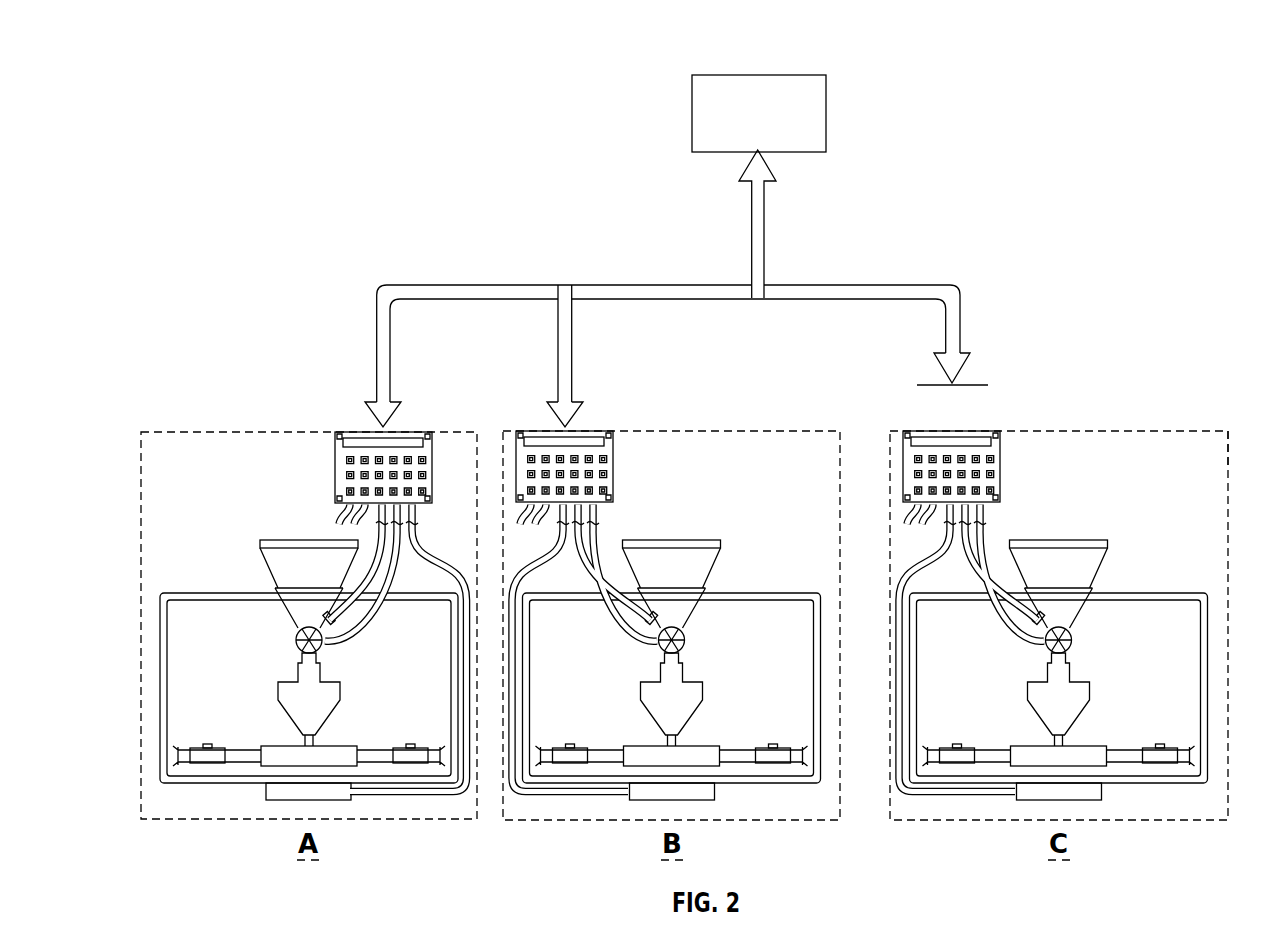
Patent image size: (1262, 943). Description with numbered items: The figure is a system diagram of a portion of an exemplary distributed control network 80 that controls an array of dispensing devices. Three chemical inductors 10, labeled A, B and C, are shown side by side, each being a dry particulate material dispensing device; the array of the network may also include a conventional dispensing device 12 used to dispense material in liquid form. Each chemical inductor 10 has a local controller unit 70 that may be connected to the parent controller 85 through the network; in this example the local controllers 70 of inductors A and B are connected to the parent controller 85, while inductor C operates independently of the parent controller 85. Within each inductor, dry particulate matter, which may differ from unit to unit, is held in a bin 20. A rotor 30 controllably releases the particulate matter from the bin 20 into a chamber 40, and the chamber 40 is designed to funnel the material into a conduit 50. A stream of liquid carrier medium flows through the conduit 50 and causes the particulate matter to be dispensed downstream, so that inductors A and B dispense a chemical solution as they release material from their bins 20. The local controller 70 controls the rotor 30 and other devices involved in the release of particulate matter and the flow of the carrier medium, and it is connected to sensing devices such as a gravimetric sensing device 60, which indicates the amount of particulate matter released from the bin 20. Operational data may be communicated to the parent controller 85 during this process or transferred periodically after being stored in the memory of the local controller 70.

The distributed control network 80 is at (165, 67).
The parent controller 85 is at (826, 113).
The chemical inductor 10 is at (199, 428).
The conventional dispensing device 12 is at (1244, 446).
The bin 20 is at (268, 572).
The rotor 30 is at (296, 637).
The chamber 40 is at (282, 706).
The conduit 50 is at (277, 747).
The gravimetric sensing device 60 is at (283, 802).
The local controller unit 70 is at (331, 478).